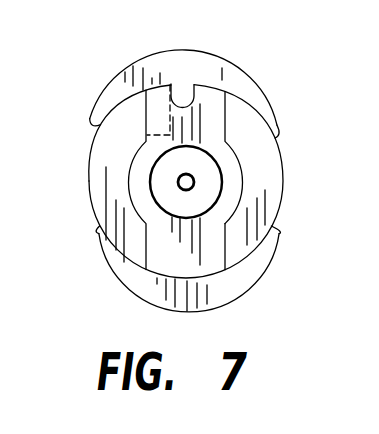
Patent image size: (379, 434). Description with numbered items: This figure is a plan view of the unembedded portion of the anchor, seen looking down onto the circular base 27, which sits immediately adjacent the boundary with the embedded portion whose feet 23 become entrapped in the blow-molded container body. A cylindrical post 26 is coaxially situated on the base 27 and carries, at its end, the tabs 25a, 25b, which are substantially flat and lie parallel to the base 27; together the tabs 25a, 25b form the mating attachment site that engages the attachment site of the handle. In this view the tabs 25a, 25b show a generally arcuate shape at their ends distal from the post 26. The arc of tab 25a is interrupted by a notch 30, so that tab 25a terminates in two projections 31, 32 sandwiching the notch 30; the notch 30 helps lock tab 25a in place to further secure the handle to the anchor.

The feet 23 is at (260, 276).
The tab 25a is at (227, 127).
The tab 25b is at (227, 242).
The cylindrical post 26 is at (243, 173).
The circular base 27 is at (89, 200).
The notch 30 is at (183, 100).
The projection 31 is at (212, 103).
The projection 32 is at (143, 117).